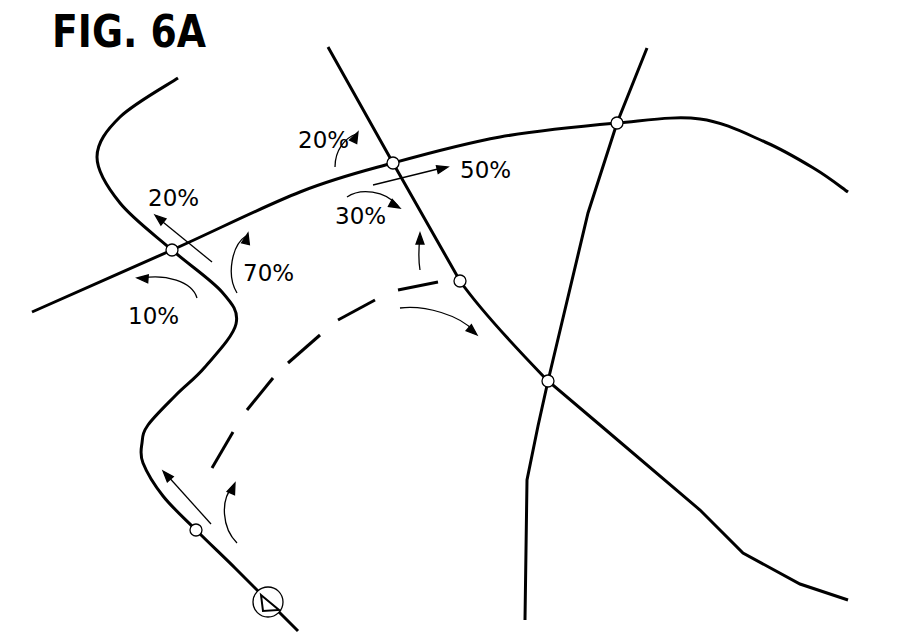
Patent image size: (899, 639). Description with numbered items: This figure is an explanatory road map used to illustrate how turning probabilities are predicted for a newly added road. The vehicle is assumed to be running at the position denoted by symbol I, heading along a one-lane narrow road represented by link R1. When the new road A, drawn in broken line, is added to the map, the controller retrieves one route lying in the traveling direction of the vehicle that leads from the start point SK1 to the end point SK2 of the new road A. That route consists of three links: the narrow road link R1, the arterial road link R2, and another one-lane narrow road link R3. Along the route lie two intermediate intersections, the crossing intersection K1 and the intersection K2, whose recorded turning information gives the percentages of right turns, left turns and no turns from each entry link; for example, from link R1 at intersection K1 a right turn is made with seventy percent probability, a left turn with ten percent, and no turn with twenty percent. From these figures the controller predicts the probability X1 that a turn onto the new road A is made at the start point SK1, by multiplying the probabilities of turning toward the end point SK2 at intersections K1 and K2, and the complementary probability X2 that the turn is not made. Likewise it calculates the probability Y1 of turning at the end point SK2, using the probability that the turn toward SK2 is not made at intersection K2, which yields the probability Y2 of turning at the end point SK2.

The link R1 is at (163, 392).
The link R2 is at (261, 196).
The link R3 is at (438, 225).
The crossing intersection K1 is at (160, 248).
The intermediate intersection K2 is at (404, 150).
The start point SK1 is at (190, 541).
The end point SK2 is at (473, 275).
The new road A is at (300, 362).
The vehicle position I is at (285, 577).
The probability X1 is at (254, 513).
The probability X2 is at (187, 482).
The probability Y1 is at (397, 255).
The probability Y2 is at (438, 332).